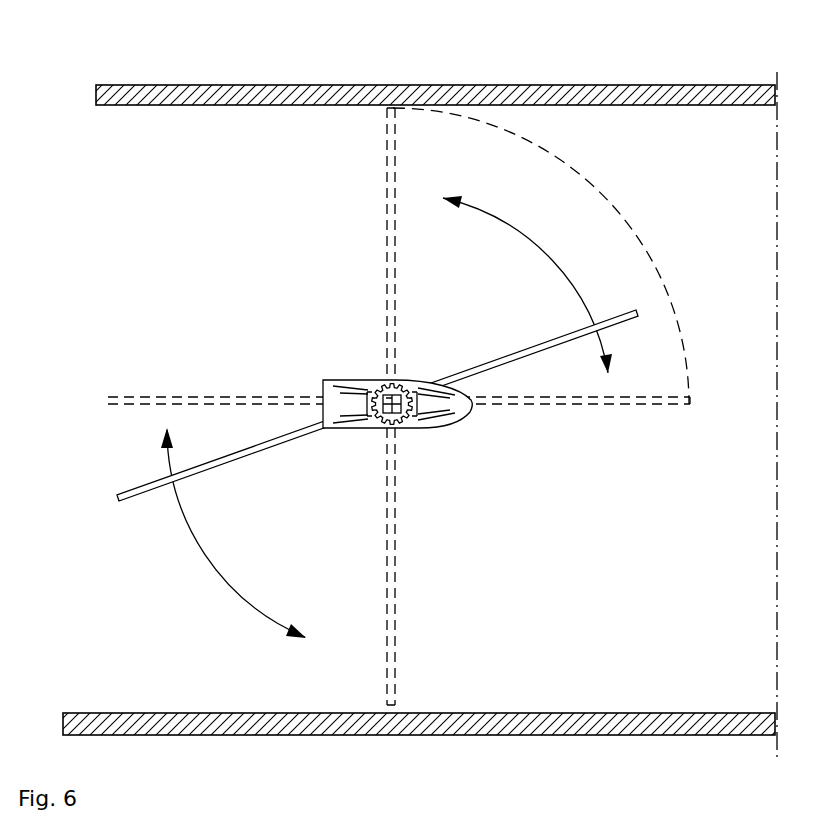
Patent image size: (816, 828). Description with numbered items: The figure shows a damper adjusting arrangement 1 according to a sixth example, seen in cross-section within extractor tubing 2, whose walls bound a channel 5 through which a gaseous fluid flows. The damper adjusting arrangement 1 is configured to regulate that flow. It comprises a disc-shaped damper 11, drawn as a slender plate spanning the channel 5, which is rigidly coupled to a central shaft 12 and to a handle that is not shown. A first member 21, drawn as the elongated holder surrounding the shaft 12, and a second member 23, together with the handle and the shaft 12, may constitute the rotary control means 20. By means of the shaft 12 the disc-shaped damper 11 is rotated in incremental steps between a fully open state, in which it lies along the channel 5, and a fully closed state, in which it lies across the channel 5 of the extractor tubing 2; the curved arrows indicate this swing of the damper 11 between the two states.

The damper adjusting arrangement 1 is at (532, 601).
The extractor tubing 2 is at (203, 85).
The channel 5 is at (402, 406).
The disc-shaped damper 11 is at (500, 365).
The shaft 12 is at (413, 383).
The rotary control means 20 is at (507, 518).
The first member 21 is at (354, 358).
The second member 23 is at (406, 432).